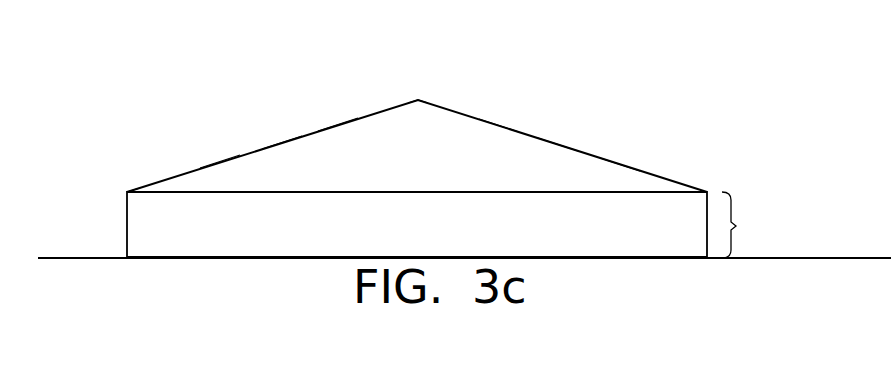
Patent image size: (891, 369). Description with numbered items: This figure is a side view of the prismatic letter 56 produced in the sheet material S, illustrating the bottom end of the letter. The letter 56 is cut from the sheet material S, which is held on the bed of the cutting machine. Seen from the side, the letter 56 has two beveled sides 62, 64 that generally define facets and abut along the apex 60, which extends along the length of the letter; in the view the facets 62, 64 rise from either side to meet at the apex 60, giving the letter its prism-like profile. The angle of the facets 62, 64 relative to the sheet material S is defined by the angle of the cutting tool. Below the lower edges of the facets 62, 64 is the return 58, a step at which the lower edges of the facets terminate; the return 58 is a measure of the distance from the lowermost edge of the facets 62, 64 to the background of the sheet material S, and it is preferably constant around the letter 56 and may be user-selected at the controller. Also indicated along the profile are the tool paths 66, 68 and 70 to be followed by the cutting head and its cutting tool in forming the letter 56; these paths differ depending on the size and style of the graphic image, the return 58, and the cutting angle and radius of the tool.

The letter 56 is at (386, 97).
The return 58 is at (746, 225).
The apex 60 is at (418, 100).
The beveled side 62 is at (282, 143).
The beveled side 64 is at (558, 144).
The tool path 66 is at (127, 192).
The tool path 68 is at (219, 162).
The tool path 70 is at (338, 124).
The sheet material S is at (797, 257).